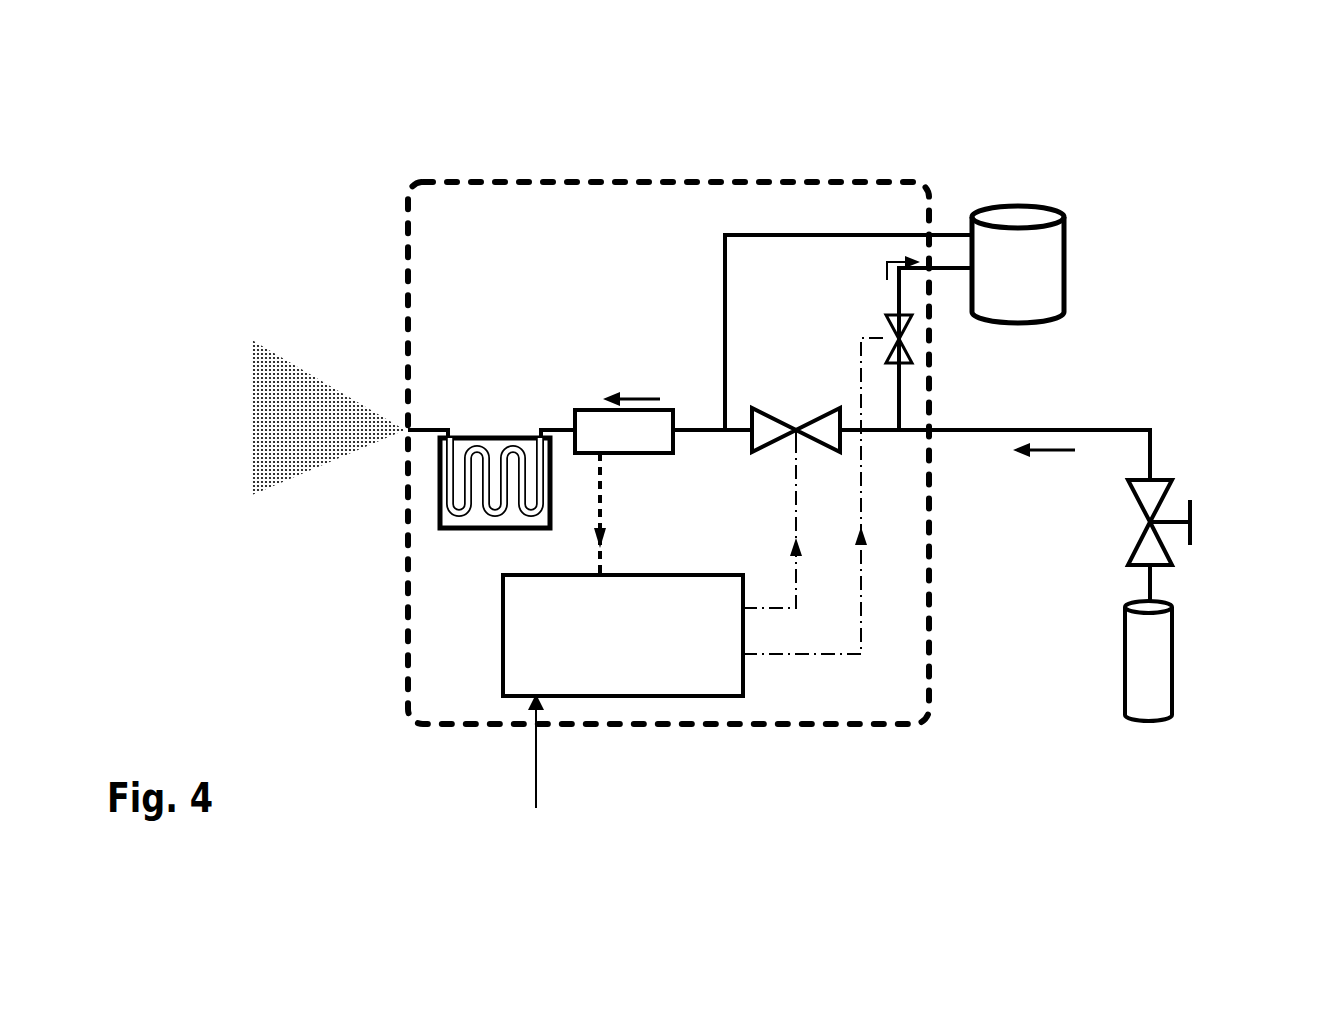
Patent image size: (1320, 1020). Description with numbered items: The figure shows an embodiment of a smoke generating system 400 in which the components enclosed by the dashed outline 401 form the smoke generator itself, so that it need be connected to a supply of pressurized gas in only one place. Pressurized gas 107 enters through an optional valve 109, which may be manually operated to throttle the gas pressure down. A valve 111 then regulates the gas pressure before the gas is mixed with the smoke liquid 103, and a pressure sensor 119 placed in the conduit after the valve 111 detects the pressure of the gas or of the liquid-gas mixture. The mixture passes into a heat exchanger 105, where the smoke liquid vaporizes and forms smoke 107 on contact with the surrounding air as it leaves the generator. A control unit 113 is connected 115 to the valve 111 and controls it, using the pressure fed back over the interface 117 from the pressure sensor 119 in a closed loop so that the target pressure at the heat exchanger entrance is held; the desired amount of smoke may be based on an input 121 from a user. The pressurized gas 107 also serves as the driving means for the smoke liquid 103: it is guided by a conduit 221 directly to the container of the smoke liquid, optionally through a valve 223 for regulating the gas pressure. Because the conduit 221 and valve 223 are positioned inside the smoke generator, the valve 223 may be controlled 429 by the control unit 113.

The smoke generating system 400 is at (1124, 160).
The housing 401 is at (404, 208).
The smoke liquid 103 is at (1017, 205).
The heat exchanger 105 is at (500, 440).
The pressurized gas 107 is at (300, 437).
The valve 109 is at (1150, 522).
The valve 111 is at (808, 424).
The control unit 113 is at (623, 635).
The connection 115 is at (796, 608).
The interface 117 is at (597, 513).
The pressure sensor 119 is at (624, 431).
The input 121 is at (536, 773).
The conduit 221 is at (898, 388).
The valve 223 is at (905, 327).
The control connection 429 is at (861, 610).